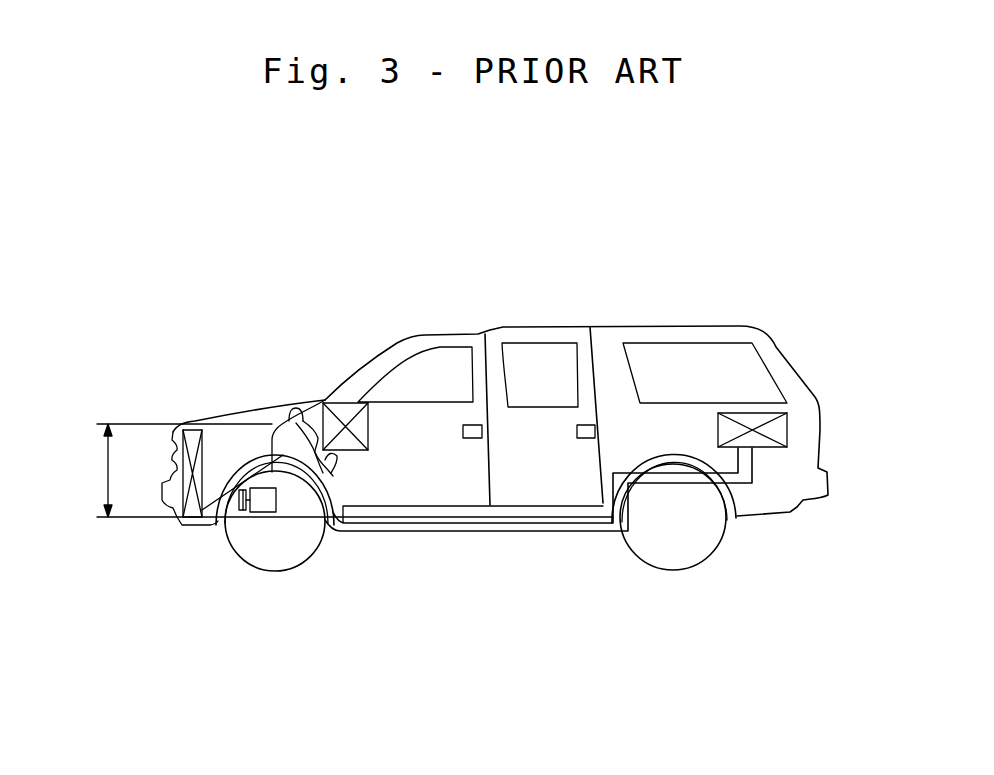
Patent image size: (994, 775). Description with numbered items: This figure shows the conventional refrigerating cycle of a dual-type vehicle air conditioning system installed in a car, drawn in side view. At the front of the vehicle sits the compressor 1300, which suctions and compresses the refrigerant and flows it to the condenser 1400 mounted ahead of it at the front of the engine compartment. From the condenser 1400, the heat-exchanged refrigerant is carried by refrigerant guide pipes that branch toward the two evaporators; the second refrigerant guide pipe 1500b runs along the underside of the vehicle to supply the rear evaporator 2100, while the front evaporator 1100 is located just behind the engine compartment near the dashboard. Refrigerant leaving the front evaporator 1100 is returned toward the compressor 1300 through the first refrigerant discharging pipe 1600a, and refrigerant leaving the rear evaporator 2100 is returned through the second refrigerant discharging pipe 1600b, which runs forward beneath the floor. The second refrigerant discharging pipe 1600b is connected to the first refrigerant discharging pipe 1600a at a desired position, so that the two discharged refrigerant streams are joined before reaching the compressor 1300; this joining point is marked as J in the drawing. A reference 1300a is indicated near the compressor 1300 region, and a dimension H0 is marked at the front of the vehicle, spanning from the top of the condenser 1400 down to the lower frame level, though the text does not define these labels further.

The front evaporator 1100 is at (368, 427).
The compressor 1300 is at (210, 522).
The front fender lower member 1300a is at (207, 497).
The condenser 1400 is at (197, 427).
The second refrigerant guide pipe 1500b is at (397, 524).
The first refrigerant discharging pipe 1600a is at (265, 488).
The second refrigerant discharging pipe 1600b is at (606, 500).
The rear evaporator 2100 is at (778, 428).
The joint region J is at (296, 418).
The height H0 is at (336, 470).